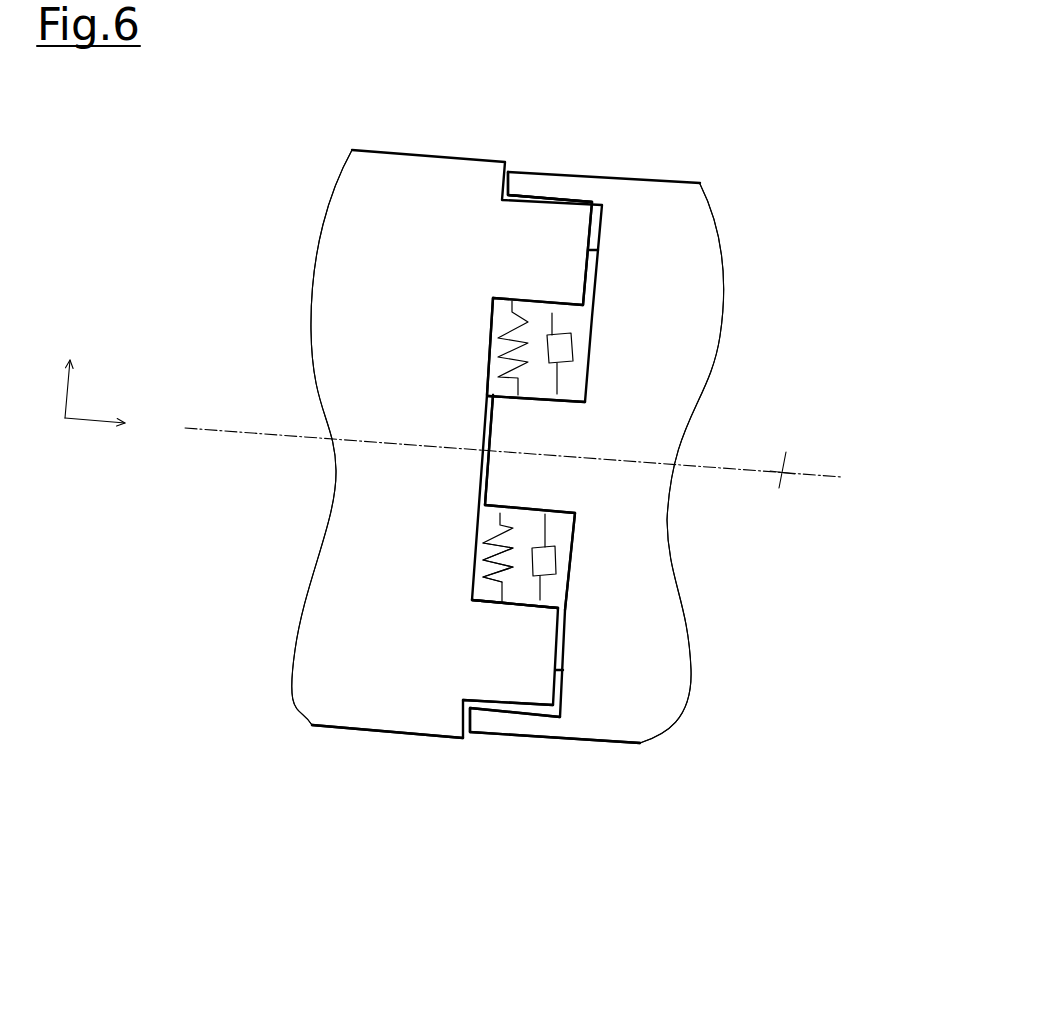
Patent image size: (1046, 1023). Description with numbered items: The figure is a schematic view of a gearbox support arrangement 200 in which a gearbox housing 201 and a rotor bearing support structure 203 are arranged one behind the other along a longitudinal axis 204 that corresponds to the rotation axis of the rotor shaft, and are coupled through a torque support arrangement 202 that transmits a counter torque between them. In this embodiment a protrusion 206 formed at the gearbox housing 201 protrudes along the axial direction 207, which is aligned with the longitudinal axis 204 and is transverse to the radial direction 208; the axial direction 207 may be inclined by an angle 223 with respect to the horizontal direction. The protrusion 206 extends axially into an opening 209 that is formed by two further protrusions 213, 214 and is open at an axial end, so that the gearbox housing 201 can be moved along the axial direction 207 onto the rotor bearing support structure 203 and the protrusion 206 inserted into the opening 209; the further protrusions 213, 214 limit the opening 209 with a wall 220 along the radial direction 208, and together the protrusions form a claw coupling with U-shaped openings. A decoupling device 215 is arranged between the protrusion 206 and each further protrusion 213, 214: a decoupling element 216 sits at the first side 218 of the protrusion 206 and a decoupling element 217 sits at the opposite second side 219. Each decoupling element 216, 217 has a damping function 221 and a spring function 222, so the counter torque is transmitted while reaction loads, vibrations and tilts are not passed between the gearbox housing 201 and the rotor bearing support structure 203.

The gearbox support arrangement 200 is at (793, 111).
The gearbox housing 201 is at (622, 598).
The torque support arrangement 202 is at (498, 771).
The rotor bearing support structure 203 is at (357, 582).
The longitudinal axis 204 is at (268, 433).
The protrusion 206 is at (548, 187).
The axial direction 207 is at (80, 422).
The radial direction 208 is at (62, 390).
The opening 209 is at (500, 312).
The further protrusion 213 is at (508, 662).
The further protrusion 214 is at (540, 257).
The decoupling device 215 is at (497, 282).
The decoupling element 216 is at (552, 325).
The decoupling element 217 is at (525, 594).
The first side 218 is at (540, 387).
The second side 219 is at (567, 520).
The wall 220 is at (535, 297).
The damping function 221 is at (550, 582).
The spring function 222 is at (483, 579).
The angle 223 is at (785, 470).